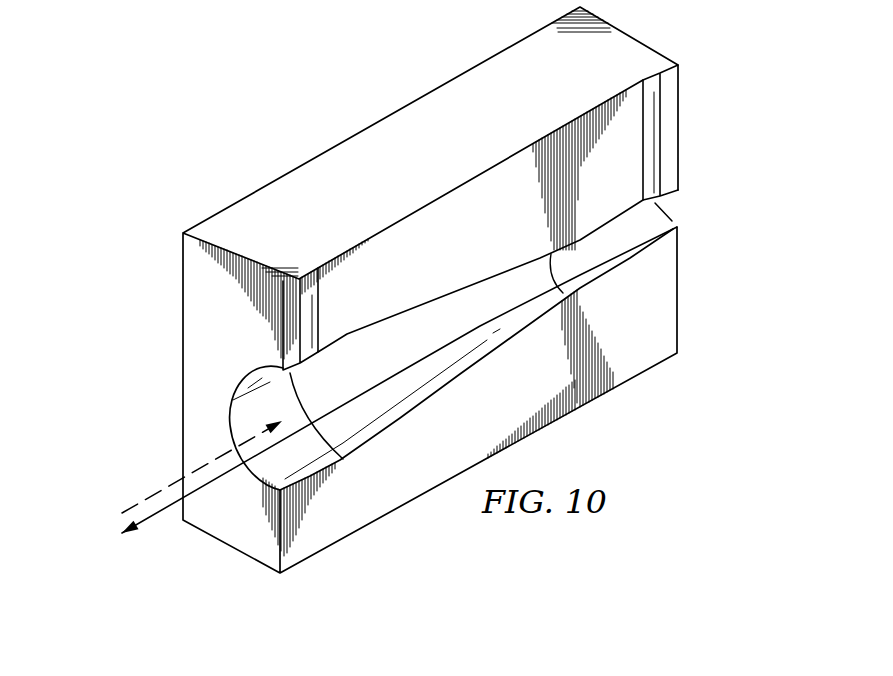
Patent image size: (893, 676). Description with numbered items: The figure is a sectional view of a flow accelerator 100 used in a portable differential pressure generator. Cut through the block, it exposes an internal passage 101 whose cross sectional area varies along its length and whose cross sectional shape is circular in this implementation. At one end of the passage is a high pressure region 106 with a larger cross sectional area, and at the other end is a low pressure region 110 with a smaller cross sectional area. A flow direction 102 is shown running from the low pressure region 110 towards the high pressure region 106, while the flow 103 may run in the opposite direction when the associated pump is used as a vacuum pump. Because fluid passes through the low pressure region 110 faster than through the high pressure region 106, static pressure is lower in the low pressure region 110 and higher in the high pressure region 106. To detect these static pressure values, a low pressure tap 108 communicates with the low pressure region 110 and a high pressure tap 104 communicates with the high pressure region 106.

The flow accelerator 100 is at (383, 122).
The internal passage 101 is at (427, 325).
The flow direction 102 is at (155, 517).
The flow 103 is at (158, 493).
The high pressure tap 104 is at (303, 272).
The high pressure region 106 is at (242, 419).
The low pressure tap 108 is at (643, 80).
The low pressure region 110 is at (653, 218).